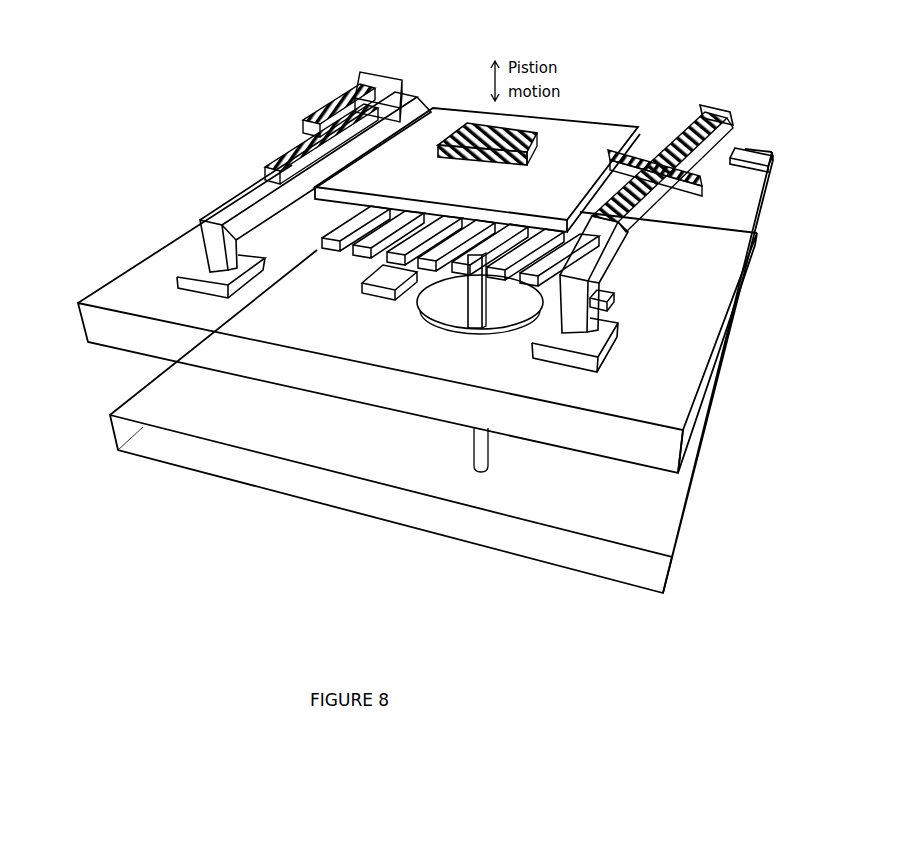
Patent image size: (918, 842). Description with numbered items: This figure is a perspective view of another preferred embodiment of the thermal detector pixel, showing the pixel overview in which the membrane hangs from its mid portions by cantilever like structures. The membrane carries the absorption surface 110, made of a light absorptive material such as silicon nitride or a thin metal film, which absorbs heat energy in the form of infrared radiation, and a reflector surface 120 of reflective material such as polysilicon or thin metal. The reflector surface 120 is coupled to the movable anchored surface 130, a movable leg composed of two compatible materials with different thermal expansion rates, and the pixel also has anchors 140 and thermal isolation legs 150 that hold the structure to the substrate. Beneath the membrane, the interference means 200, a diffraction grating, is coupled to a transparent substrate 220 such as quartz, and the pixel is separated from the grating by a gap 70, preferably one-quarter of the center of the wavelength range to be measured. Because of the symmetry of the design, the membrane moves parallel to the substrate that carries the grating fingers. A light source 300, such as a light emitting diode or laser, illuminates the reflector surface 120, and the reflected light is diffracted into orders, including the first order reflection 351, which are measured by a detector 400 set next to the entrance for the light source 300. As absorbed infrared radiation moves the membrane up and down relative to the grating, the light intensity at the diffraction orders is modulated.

The gap 70 is at (68, 320).
The absorption surface 110 is at (563, 152).
The reflector surface 120 is at (447, 142).
The movable anchored surface 130 is at (330, 153).
The anchor 140 is at (192, 270).
The thermal isolation leg 150 is at (210, 213).
The interference means 200 is at (398, 258).
The transparent substrate 220 is at (712, 265).
The light source 300 is at (476, 292).
The first order reflection 351 is at (466, 272).
The detector 400 is at (362, 282).